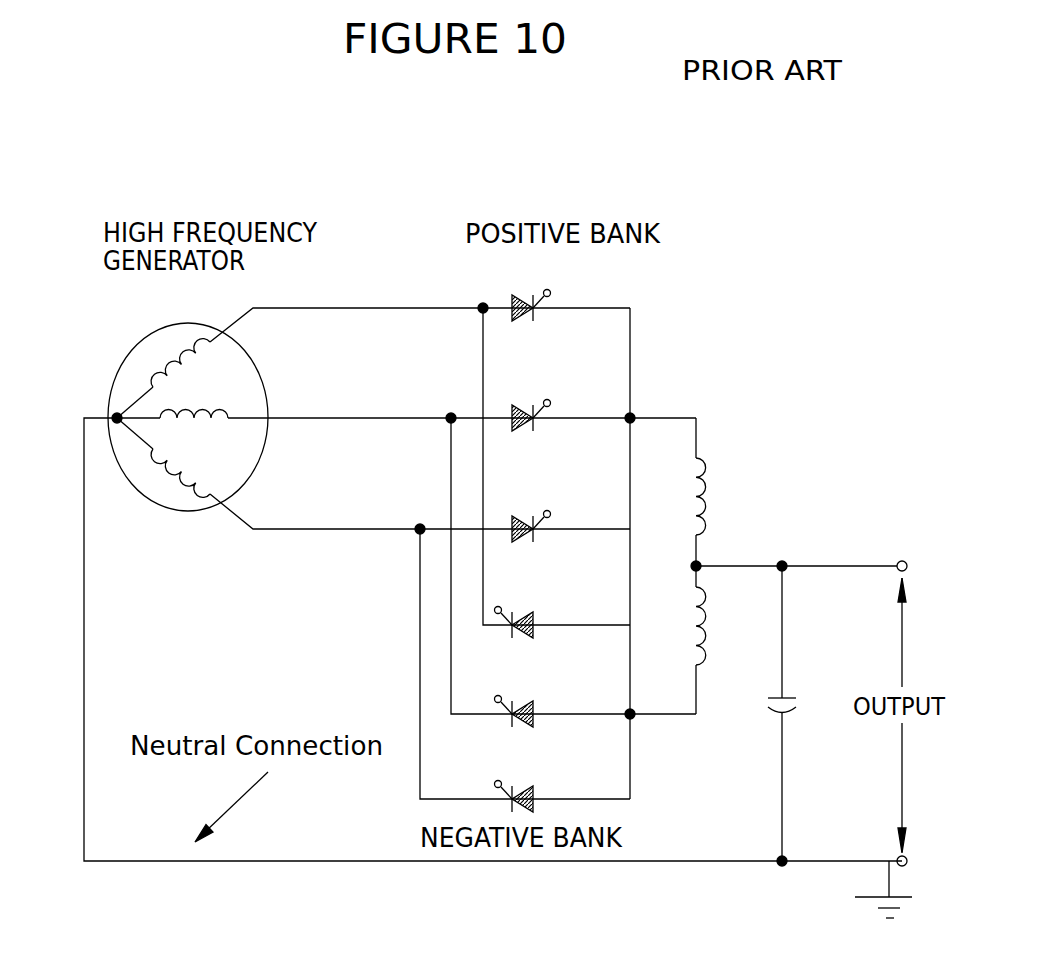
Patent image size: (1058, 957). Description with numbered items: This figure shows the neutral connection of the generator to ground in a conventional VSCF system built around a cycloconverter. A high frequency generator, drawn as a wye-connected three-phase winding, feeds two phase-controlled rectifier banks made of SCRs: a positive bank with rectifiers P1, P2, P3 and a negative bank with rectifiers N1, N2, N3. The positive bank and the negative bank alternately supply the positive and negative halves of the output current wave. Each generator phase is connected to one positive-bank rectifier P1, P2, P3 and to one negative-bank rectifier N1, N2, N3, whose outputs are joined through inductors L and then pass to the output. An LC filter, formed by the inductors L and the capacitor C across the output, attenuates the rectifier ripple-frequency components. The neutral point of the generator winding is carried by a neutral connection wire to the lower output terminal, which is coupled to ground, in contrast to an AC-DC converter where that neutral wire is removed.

The positive bank thyristor P1 is at (547, 300).
The positive bank thyristor P2 is at (547, 410).
The positive bank thyristor P3 is at (547, 521).
The negative bank thyristor N1 is at (536, 617).
The negative bank thyristor N2 is at (536, 706).
The negative bank thyristor N3 is at (536, 791).
The inductor L is at (712, 566).
The capacitor C is at (795, 713).